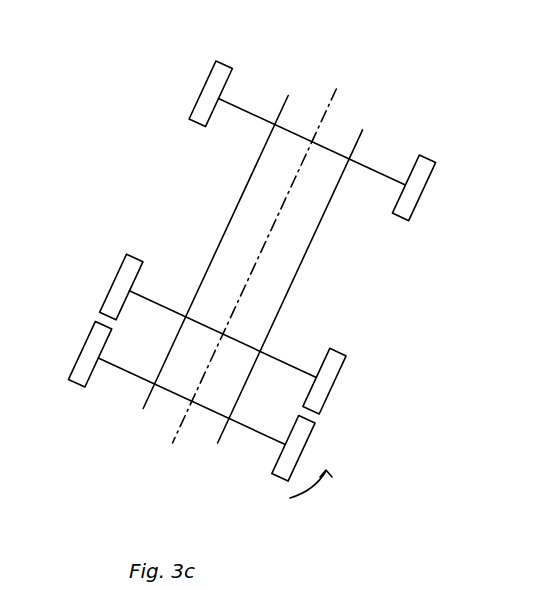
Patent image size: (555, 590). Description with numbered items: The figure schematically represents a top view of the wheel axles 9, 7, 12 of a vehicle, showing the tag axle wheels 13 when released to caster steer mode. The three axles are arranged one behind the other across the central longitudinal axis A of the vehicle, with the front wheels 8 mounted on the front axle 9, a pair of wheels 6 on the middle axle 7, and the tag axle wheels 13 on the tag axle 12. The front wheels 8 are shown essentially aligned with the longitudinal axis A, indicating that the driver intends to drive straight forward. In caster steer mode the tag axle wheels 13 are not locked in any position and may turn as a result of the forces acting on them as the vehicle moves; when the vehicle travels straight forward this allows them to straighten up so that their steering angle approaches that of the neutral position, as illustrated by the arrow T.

The middle wheel 6 is at (141, 262).
The wheel axle 7 is at (285, 360).
The front wheels 8 is at (226, 70).
The wheel axle 9 is at (253, 110).
The tag axle 12 is at (197, 406).
The tag axle wheels 13 is at (80, 376).
The longitudinal axis A is at (341, 92).
The arrow T is at (315, 492).